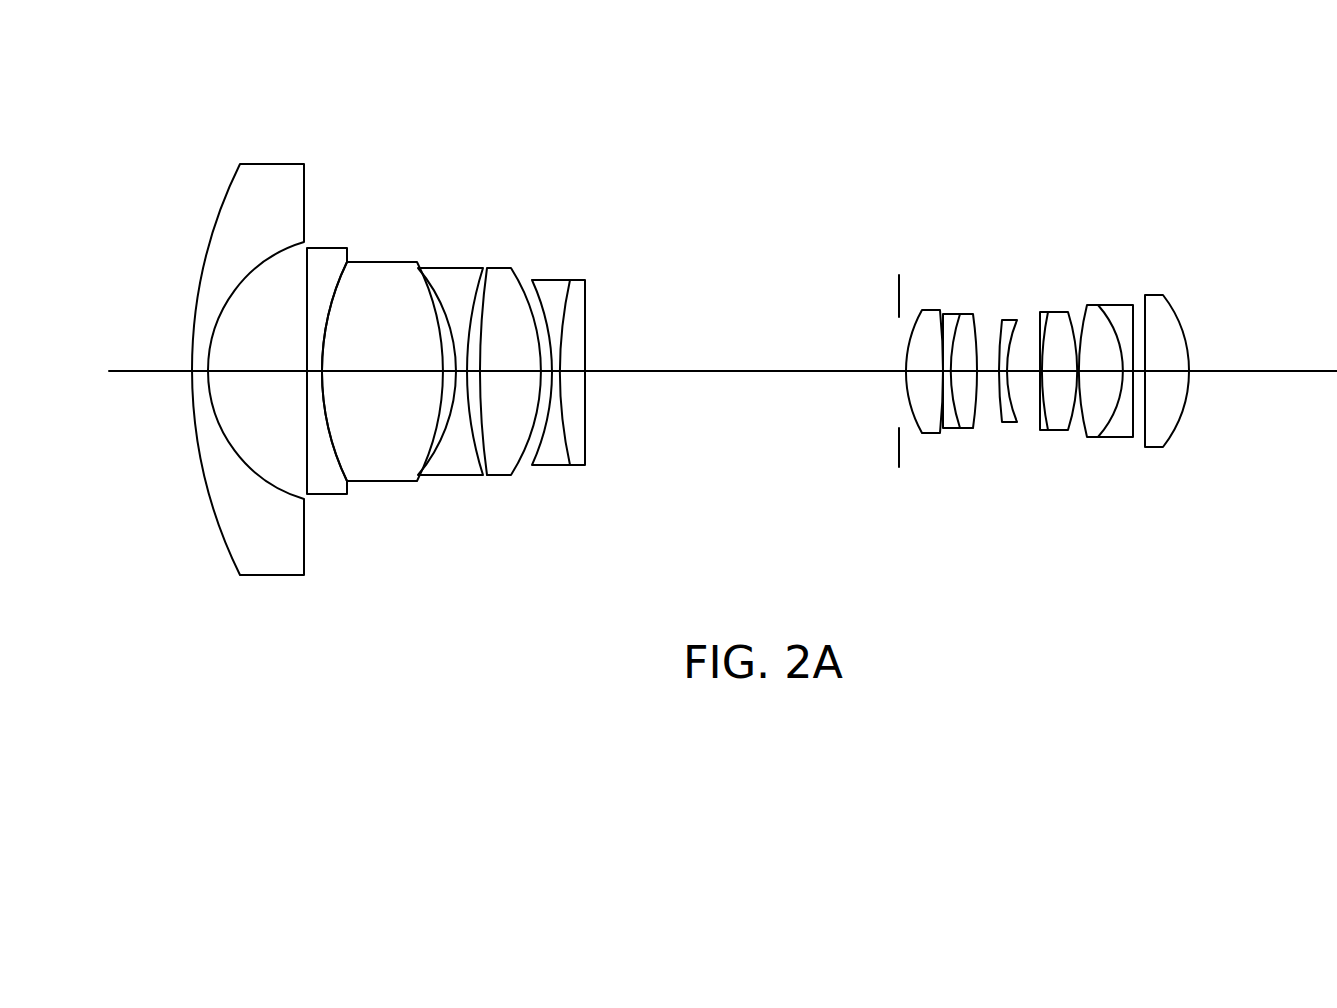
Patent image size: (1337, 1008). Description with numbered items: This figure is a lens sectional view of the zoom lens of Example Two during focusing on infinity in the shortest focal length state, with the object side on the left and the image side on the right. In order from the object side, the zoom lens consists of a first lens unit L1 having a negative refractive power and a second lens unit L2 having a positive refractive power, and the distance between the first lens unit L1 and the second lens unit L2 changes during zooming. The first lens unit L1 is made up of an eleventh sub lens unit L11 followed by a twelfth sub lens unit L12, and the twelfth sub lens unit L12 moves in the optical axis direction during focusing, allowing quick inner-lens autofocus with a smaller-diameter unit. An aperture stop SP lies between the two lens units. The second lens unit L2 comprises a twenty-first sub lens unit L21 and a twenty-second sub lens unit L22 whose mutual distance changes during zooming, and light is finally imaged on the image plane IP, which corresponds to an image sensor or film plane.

The first lens unit L1 is at (585, 92).
The eleventh sub lens unit L11 is at (193, 155).
The twelfth sub lens unit L12 is at (552, 155).
The second lens unit L2 is at (907, 92).
The twenty-first sub lens unit L21 is at (907, 135).
The twenty-second sub lens unit L22 is at (1038, 135).
The aperture stop SP is at (873, 278).
The image plane IP is at (1324, 308).